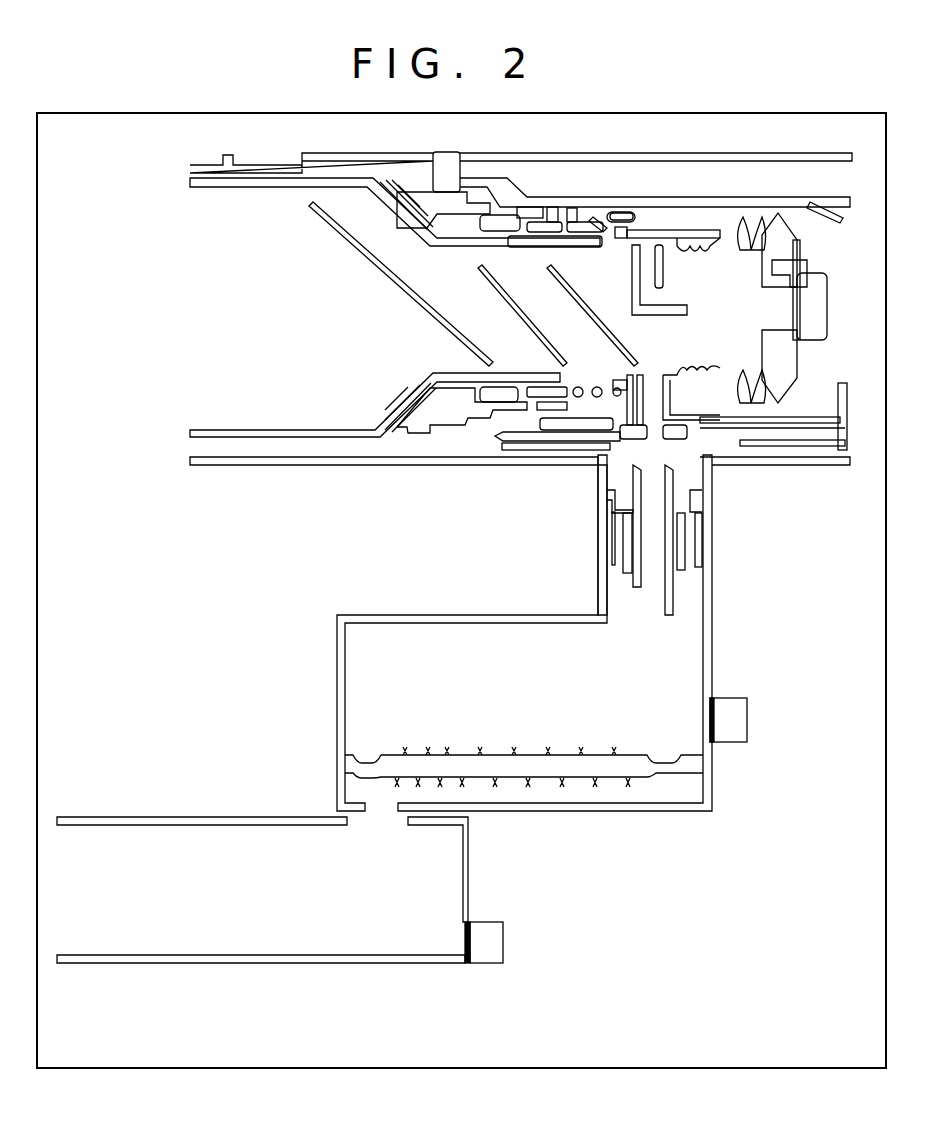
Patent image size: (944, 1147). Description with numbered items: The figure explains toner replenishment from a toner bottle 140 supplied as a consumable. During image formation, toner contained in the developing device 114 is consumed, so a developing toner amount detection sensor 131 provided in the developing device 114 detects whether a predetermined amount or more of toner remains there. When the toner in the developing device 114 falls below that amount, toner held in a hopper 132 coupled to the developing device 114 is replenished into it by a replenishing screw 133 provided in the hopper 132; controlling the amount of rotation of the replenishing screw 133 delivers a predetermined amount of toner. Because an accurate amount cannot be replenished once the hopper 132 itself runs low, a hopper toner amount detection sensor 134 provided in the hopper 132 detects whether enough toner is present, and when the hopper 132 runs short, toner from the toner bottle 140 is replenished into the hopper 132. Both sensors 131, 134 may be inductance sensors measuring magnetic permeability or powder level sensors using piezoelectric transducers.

The toner bottle 140 is at (255, 322).
The hopper 132 is at (338, 672).
The replenishing screw 133 is at (513, 767).
The hopper toner amount detection sensor 134 is at (748, 718).
The developing toner amount detection sensor 131 is at (503, 940).
The developing device 114 is at (243, 900).